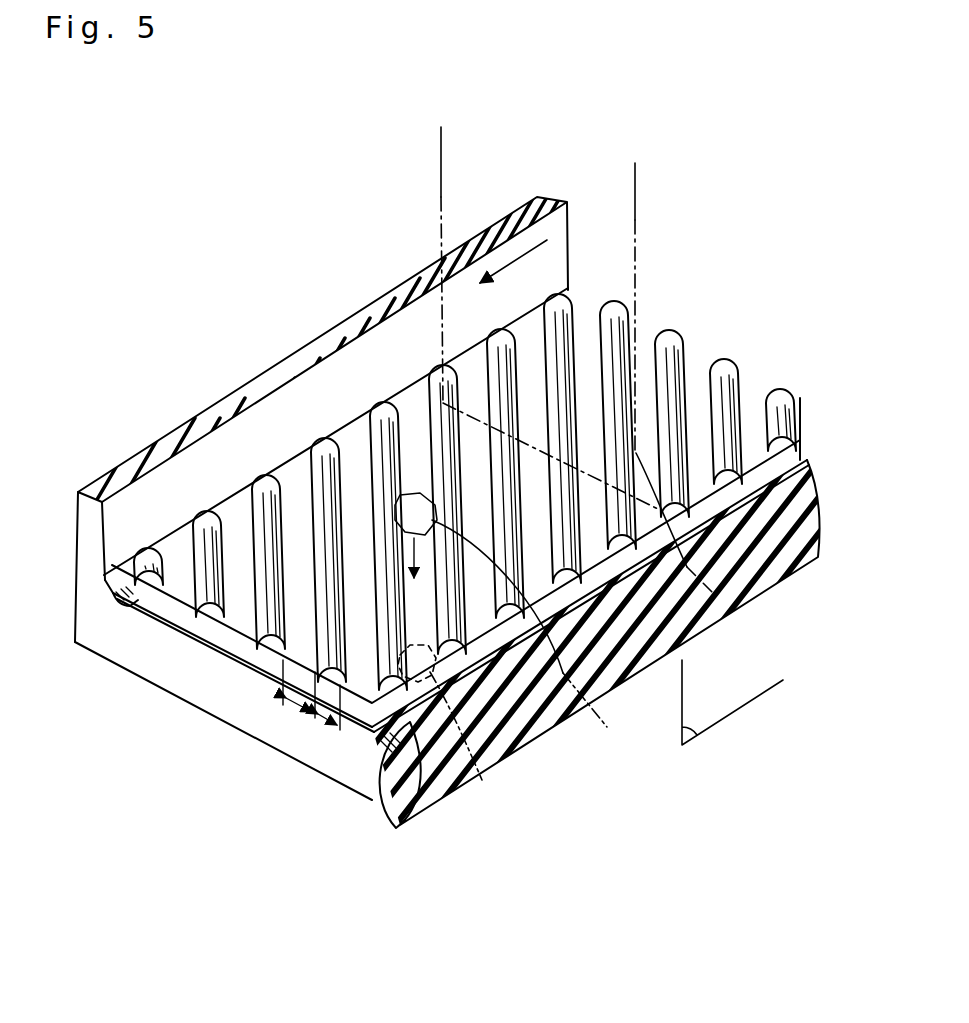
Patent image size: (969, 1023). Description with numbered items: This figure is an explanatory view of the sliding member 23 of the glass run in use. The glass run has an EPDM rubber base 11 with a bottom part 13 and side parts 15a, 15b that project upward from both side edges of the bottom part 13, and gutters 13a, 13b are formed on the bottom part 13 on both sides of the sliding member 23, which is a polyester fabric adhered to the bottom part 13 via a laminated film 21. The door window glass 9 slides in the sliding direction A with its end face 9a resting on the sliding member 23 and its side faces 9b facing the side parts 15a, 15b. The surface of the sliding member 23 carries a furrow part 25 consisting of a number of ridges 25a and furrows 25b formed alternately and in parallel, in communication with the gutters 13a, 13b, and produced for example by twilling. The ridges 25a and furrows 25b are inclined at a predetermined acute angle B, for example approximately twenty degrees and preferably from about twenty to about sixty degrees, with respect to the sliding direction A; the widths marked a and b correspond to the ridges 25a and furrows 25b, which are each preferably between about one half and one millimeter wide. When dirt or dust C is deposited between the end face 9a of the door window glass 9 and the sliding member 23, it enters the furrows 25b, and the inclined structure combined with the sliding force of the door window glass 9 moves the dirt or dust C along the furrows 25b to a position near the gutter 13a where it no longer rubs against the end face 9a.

The door window glass 9 is at (441, 170).
The end face 9a is at (712, 592).
The side faces 9b is at (441, 345).
The rubber base 11 is at (83, 617).
The bottom part 13 is at (280, 738).
The gutter 13a is at (372, 732).
The gutter 13b is at (106, 612).
The side part 15a is at (418, 793).
The side part 15b is at (167, 447).
The laminated film 21 is at (346, 782).
The sliding member 23 is at (187, 614).
The furrow part 25 is at (232, 838).
The ridges 25a is at (270, 646).
The furrows 25b is at (240, 627).
The sliding direction A is at (515, 263).
The acute angle B is at (690, 732).
The dirt or dust C is at (484, 782).
The rib width a is at (336, 724).
The valley width b is at (300, 708).